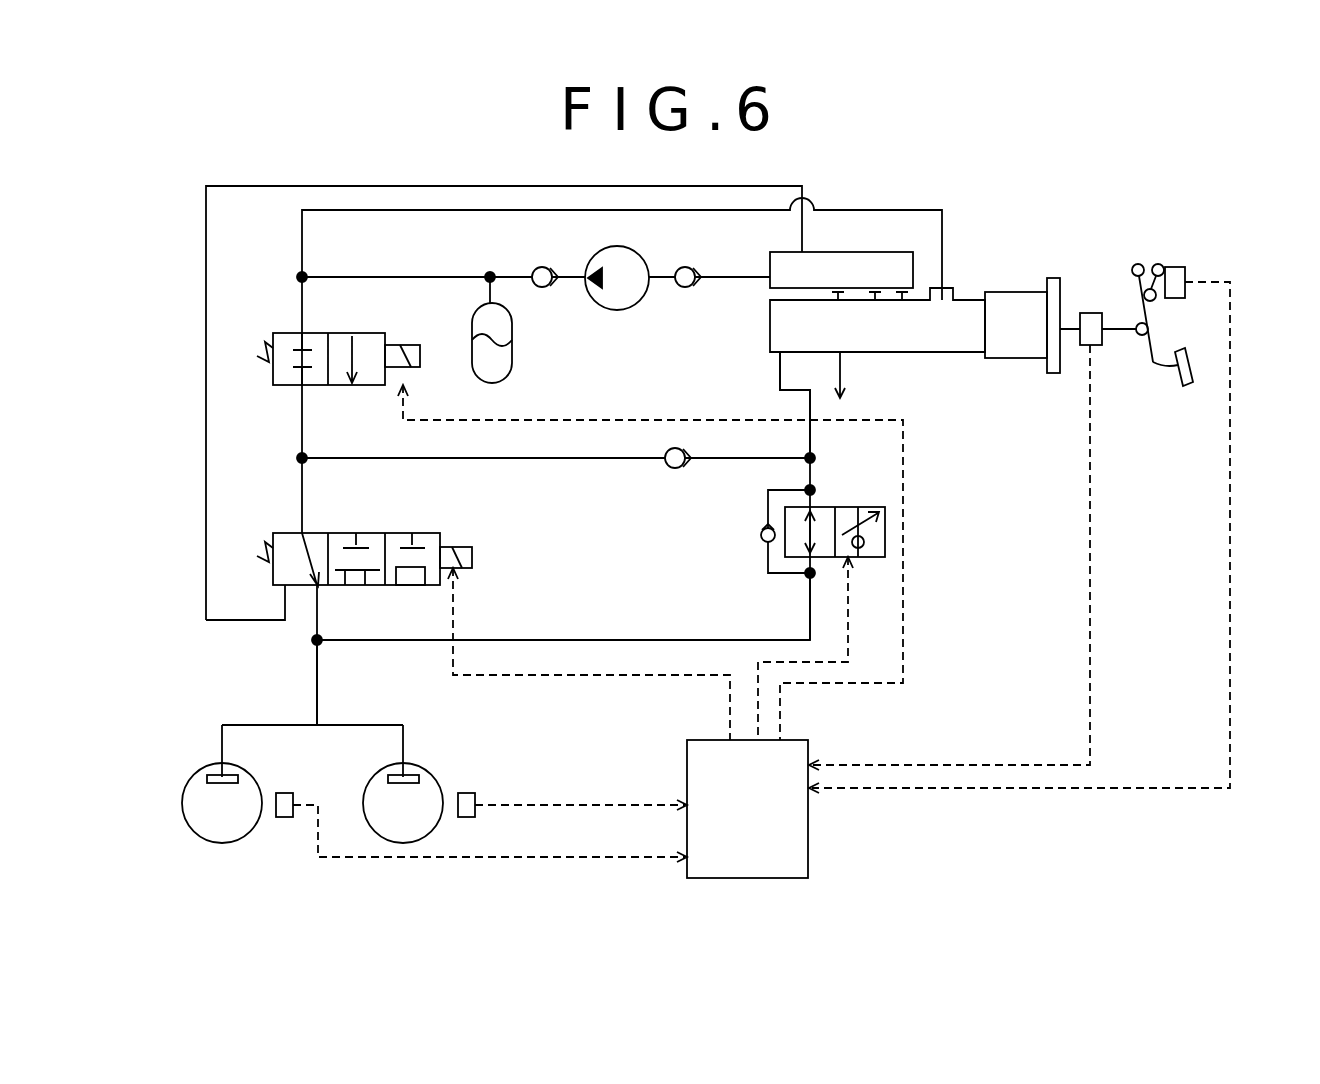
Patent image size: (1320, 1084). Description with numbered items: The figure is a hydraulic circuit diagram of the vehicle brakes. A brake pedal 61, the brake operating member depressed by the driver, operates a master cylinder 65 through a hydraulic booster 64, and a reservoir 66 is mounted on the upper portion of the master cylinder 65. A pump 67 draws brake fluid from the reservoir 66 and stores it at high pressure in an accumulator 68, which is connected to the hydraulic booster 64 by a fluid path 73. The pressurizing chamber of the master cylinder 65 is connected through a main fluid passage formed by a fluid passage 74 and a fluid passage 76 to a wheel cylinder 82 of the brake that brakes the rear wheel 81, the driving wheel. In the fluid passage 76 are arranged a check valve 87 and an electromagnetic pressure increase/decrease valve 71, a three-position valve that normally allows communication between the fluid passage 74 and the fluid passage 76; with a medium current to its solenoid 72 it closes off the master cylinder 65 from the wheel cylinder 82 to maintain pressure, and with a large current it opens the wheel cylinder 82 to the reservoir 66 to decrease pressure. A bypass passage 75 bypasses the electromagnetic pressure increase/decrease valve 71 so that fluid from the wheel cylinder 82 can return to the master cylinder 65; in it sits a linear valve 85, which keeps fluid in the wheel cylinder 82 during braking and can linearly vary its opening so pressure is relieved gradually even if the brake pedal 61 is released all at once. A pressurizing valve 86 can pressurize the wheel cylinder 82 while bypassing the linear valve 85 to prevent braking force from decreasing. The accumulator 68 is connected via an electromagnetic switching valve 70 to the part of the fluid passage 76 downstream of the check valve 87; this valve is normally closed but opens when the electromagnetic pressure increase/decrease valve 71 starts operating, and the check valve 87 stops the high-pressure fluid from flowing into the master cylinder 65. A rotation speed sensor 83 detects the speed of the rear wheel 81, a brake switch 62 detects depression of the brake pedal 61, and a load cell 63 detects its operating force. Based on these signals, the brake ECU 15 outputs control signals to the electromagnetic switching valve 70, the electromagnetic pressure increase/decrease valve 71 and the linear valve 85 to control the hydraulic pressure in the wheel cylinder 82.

The brake ECU 15 is at (808, 843).
The brake pedal 61 is at (1155, 366).
The brake switch 62 is at (1178, 267).
The load cell 63 is at (1090, 313).
The hydraulic booster 64 is at (1015, 358).
The master cylinder 65 is at (925, 352).
The reservoir 66 is at (770, 256).
The pump 67 is at (620, 310).
The accumulator 68 is at (512, 372).
The electromagnetic switching valve 70 is at (356, 333).
The electromagnetic pressure increase/decrease valve 71 is at (352, 533).
The solenoid 72 is at (462, 547).
The fluid path 73 is at (425, 210).
The fluid passage 74 is at (316, 681).
The bypass passage 75 is at (808, 626).
The fluid passage 76 is at (780, 370).
The rear wheel 81 is at (437, 775).
The wheel cylinder 82 is at (238, 776).
The rotation speed sensor 83 is at (475, 795).
The linear valve 85 is at (880, 507).
The pressurizing valve 86 is at (762, 541).
The check valve 87 is at (668, 470).